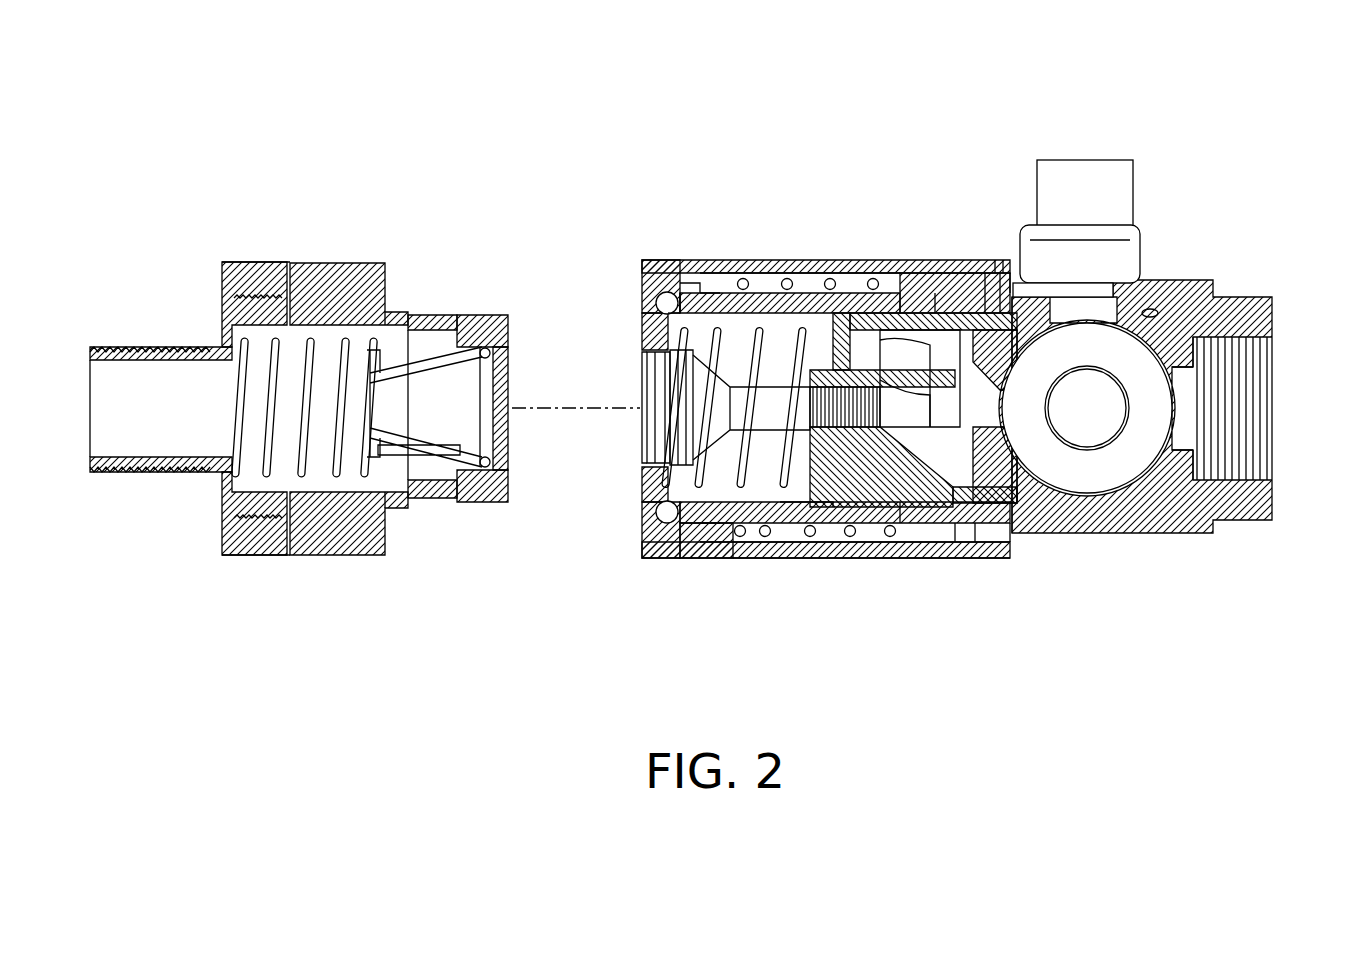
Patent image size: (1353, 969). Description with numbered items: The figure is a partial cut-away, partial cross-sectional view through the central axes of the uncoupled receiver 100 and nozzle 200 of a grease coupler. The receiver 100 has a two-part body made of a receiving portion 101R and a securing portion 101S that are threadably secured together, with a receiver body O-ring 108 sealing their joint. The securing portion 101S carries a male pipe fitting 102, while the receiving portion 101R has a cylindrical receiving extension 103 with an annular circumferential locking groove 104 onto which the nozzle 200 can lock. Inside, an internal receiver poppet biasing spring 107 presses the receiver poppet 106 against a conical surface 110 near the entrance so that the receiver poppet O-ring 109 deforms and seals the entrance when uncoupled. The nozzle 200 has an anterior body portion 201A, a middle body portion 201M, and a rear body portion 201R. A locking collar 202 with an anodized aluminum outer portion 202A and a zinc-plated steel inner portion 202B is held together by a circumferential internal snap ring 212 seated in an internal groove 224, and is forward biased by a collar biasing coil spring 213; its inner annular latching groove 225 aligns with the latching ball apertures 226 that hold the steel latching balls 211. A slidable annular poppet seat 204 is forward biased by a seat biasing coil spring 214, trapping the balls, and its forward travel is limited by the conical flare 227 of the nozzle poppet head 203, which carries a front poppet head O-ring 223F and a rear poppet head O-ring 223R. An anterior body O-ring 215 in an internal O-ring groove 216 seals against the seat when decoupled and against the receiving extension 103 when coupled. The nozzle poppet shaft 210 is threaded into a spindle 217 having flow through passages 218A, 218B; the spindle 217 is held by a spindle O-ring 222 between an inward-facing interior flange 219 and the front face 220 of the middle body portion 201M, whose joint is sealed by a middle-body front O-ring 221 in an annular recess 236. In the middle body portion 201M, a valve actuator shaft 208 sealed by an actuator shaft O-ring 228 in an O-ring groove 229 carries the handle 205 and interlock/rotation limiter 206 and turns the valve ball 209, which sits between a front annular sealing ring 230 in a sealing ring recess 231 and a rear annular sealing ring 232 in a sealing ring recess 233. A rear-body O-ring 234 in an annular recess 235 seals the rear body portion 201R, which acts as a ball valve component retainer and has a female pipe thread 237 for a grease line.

The receiver 100 is at (195, 582).
The receiving portion 101R is at (312, 288).
The securing portion 101S is at (256, 288).
The male pipe fitting 102 is at (172, 478).
The cylindrical receiving extension 103 is at (440, 318).
The annular circumferential locking groove 104 is at (436, 505).
The receiver poppet 106 is at (408, 360).
The internal receiver poppet biasing spring 107 is at (340, 420).
The receiver body O-ring 108 is at (236, 297).
The receiver poppet O-ring 109 is at (458, 300).
The conical surface 110 is at (484, 486).
The nozzle 200 is at (1190, 622).
The anterior body portion 201A is at (870, 560).
The middle body portion 201M is at (1120, 505).
The rear body portion 201R is at (1250, 540).
The locking collar 202 is at (732, 542).
The outer portion of the locking collar 202A is at (760, 292).
The inner portion of the locking collar 202B is at (722, 294).
The nozzle poppet head 203 is at (745, 360).
The slidable annular poppet seat 204 is at (682, 480).
The handle 205 is at (1100, 180).
The interlock/rotation limiter 206 is at (1130, 240).
The valve actuator shaft 208 is at (1120, 285).
The valve ball 209 is at (1085, 470).
The nozzle poppet shaft 210 is at (787, 405).
The steel latching balls 211 is at (672, 300).
The circumferential internal snap ring 212 is at (960, 533).
The collar biasing coil spring 213 is at (795, 502).
The seat biasing coil spring 214 is at (760, 562).
The anterior body O-ring 215 is at (690, 306).
The internal O-ring groove 216 is at (690, 542).
The spindle 217 is at (865, 393).
The flow through passage 218A is at (900, 355).
The flow through passage 218B is at (935, 462).
The inward-facing interior flange 219 is at (870, 510).
The front face 220 is at (907, 300).
The middle-body front O-ring 221 is at (920, 300).
The spindle O-ring 222 is at (830, 522).
The front poppet head O-ring 223F is at (660, 400).
The rear poppet head O-ring 223R is at (680, 420).
The internal groove 224 is at (990, 300).
The inner annular latching groove 225 is at (666, 525).
The latching ball apertures 226 is at (655, 515).
The conical flare 227 is at (655, 445).
The actuator shaft O-ring 228 is at (998, 258).
The O-ring groove 229 is at (1008, 300).
The front annular sealing ring 230 is at (985, 530).
The sealing ring recess 231 is at (950, 300).
The rear annular sealing ring 232 is at (1045, 530).
The sealing ring recess 233 is at (1262, 480).
The rear-body O-ring 234 is at (1180, 535).
The annular recess 235 is at (1160, 297).
The annular recess 236 is at (1000, 447).
The female pipe thread 237 is at (1276, 408).